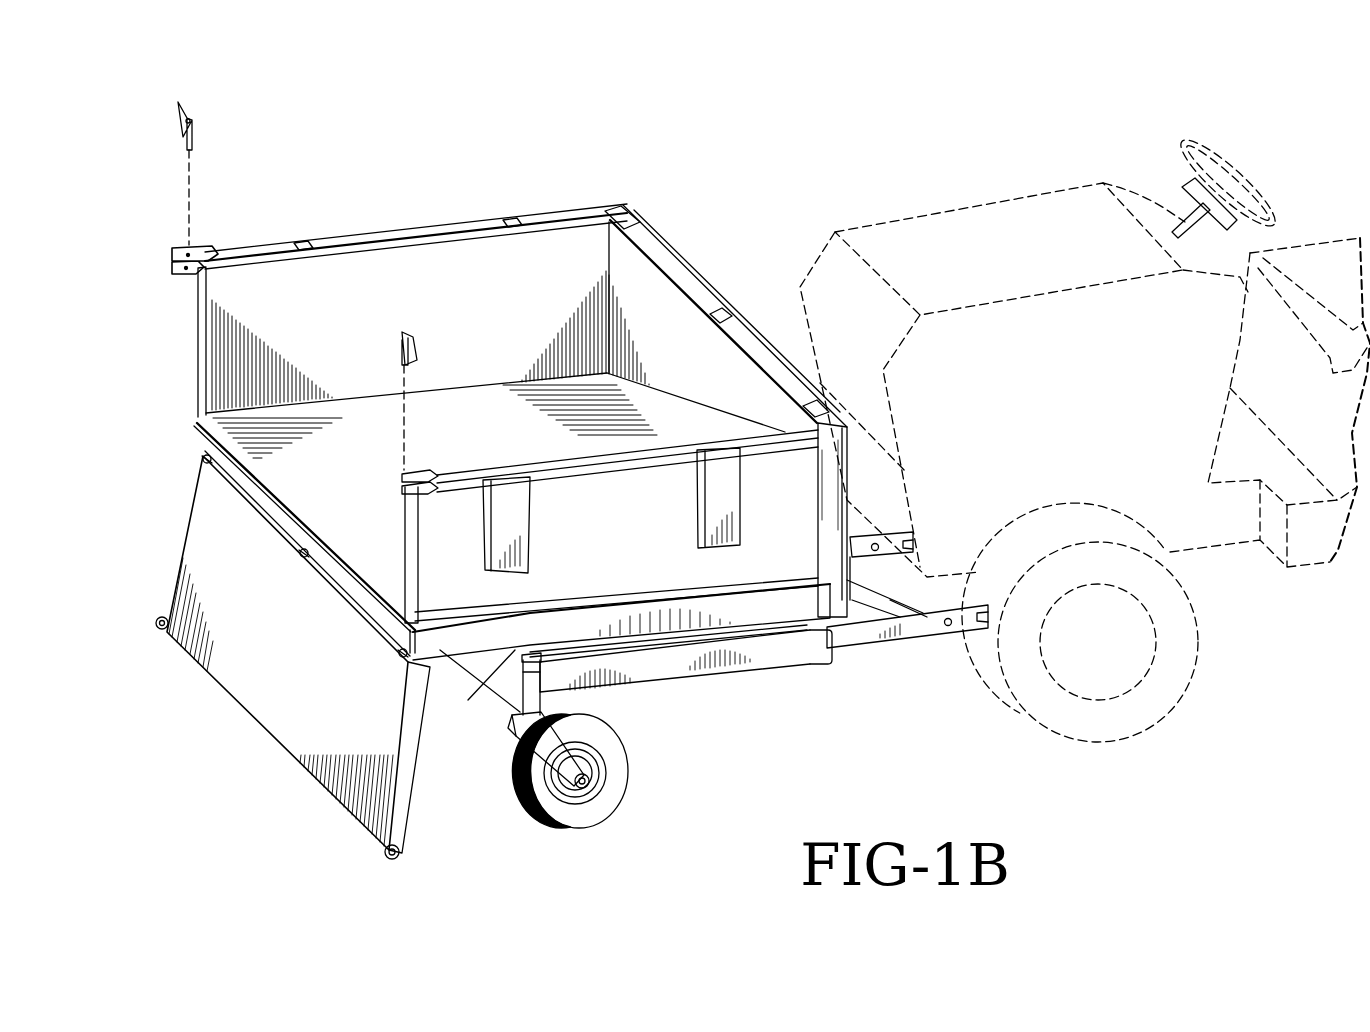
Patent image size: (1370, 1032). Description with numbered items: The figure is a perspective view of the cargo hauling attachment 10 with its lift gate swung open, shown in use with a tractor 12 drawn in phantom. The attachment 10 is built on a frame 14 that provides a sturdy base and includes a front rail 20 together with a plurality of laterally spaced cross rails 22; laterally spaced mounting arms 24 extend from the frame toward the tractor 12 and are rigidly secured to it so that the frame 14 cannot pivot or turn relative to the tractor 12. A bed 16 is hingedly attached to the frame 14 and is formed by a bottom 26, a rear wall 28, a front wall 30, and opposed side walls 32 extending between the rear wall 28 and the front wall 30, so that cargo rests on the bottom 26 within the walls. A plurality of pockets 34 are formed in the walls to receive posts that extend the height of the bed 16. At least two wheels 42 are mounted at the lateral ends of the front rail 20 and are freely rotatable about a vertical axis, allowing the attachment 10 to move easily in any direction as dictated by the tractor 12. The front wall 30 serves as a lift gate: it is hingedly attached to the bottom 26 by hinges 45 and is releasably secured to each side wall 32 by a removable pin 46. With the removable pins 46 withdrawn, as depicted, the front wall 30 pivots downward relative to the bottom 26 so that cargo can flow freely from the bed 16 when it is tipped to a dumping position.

The cargo hauling attachment 10 is at (348, 162).
The tractor 12 is at (931, 213).
The frame 14 is at (804, 680).
The bed 16 is at (230, 480).
The front rail 20 is at (495, 663).
The cross rails 22 is at (657, 660).
The mounting arms 24 is at (927, 623).
The bottom 26 is at (330, 475).
The rear wall 28 is at (682, 378).
The front wall 30 is at (260, 650).
The side walls 32 is at (478, 325).
The pockets 34 is at (300, 240).
The wheels 42 is at (550, 800).
The hinges 45 is at (200, 458).
The removable pin 46 is at (192, 127).